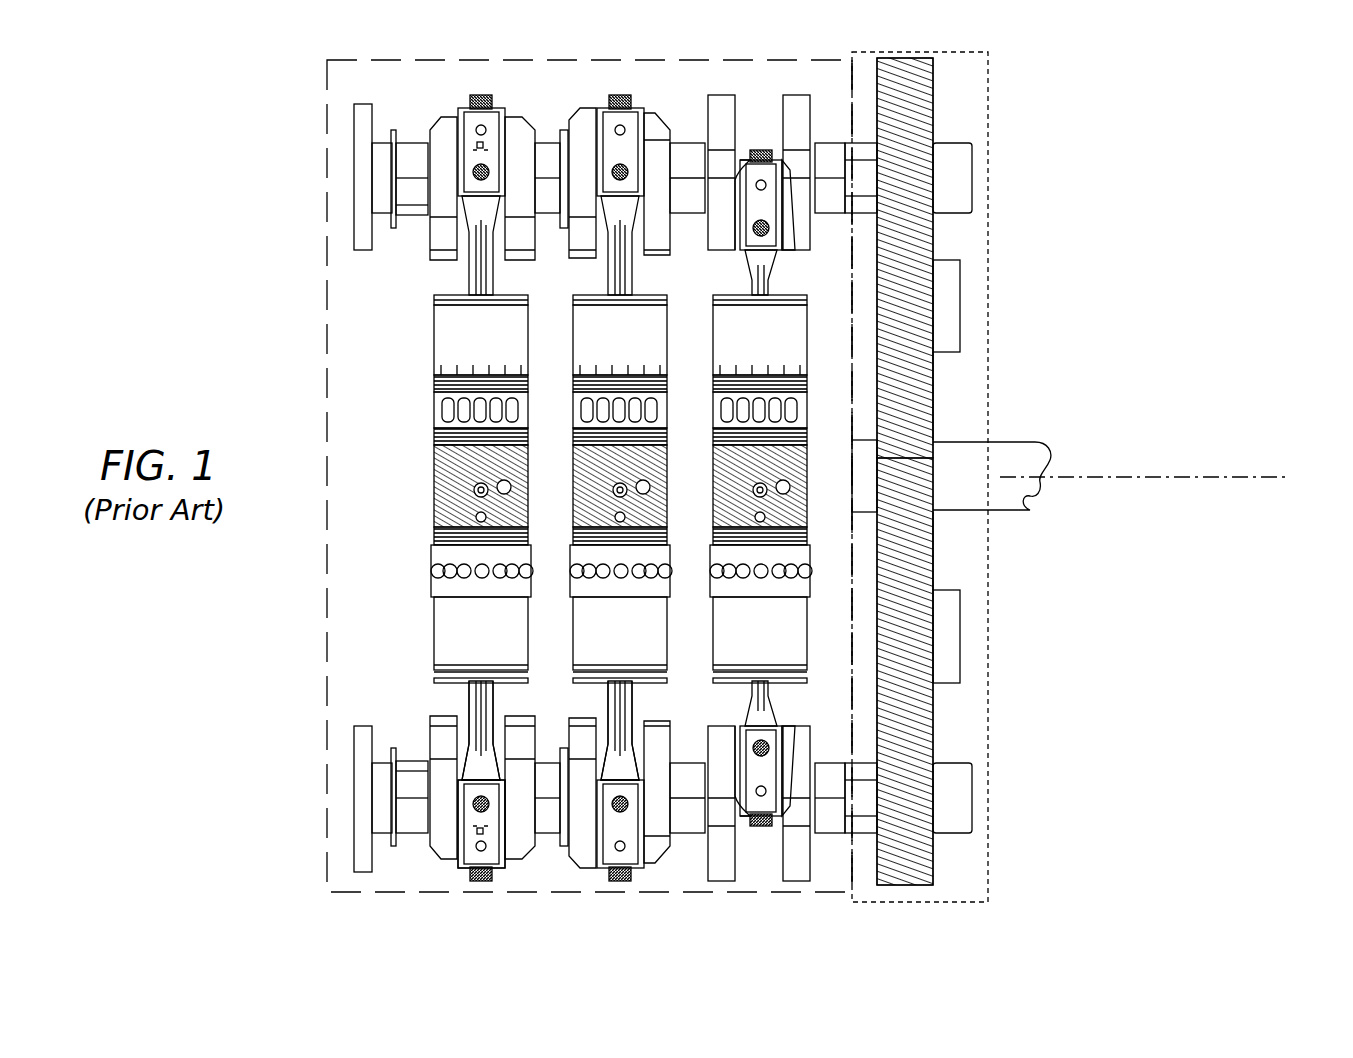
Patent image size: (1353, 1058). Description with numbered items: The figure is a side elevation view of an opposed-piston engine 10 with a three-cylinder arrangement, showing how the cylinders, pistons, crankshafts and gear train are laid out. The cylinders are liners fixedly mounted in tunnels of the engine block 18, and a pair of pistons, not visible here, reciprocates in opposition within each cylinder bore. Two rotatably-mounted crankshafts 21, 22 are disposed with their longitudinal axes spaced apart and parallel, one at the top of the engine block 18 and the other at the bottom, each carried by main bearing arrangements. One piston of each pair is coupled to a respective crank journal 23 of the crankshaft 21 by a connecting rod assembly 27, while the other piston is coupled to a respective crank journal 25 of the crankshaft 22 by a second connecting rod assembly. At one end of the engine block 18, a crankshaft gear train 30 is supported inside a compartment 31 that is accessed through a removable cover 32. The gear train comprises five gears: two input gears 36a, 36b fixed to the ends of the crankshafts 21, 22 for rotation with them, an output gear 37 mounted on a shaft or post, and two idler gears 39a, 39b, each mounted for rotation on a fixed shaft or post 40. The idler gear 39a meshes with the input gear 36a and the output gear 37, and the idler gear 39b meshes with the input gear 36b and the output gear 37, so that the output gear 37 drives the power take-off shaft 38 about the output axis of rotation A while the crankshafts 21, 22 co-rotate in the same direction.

The opposed-piston engine 10 is at (310, 48).
The engine block 18 is at (551, 185).
The crankshaft 21 is at (412, 179).
The crankshaft 22 is at (572, 774).
The crank journal 23 is at (481, 145).
The crank journal 25 is at (481, 824).
The connecting rod assembly 27 is at (481, 245).
The crankshaft gear train 30 is at (1002, 471).
The compartment 31 is at (878, 58).
The removable cover 32 is at (988, 268).
The input gear 36a is at (912, 92).
The input gear 36b is at (935, 855).
The output gear 37 is at (935, 416).
The power take-off shaft 38 is at (1025, 452).
The idler gear 39a is at (935, 360).
The idler gear 39b is at (935, 578).
The fixed shaft or post 40 is at (958, 288).
The output axis of rotation A is at (1173, 477).